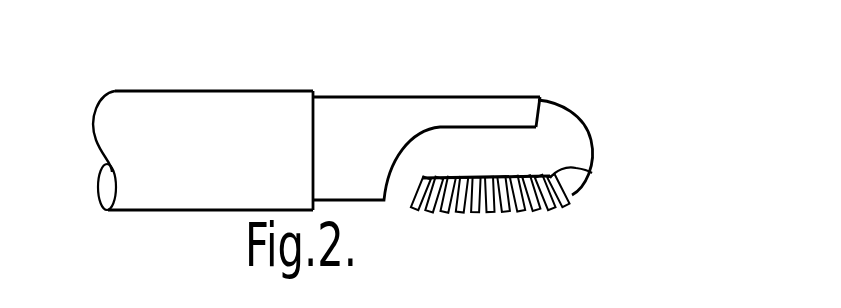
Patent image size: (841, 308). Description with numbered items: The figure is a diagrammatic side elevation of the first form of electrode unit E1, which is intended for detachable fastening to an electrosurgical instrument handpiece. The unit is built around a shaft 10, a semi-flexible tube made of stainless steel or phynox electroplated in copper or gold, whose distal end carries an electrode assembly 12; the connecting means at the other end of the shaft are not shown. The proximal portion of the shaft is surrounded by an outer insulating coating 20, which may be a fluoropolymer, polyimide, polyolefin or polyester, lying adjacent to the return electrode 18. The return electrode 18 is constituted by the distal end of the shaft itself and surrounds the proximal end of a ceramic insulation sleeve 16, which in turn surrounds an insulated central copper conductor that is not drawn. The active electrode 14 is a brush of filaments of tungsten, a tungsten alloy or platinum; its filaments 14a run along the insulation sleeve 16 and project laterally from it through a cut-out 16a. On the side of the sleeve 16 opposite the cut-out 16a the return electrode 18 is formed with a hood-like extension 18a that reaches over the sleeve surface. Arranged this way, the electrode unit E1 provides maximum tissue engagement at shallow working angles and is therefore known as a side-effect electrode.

The shaft 10 is at (107, 195).
The outer insulating coating 20 is at (147, 197).
The electrode unit E1 is at (277, 76).
The return electrode 18 is at (390, 108).
The electrode assembly 12 is at (459, 80).
The hood-like extension 18a is at (527, 97).
The ceramic insulation sleeve 16 is at (563, 152).
The cut-out 16a is at (594, 172).
The active electrode 14 is at (461, 238).
The filaments 14a is at (503, 217).